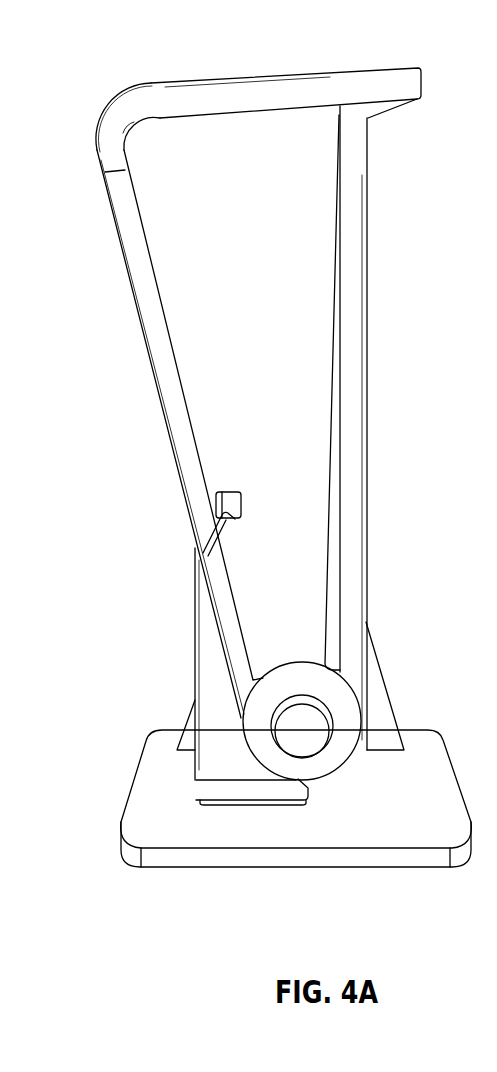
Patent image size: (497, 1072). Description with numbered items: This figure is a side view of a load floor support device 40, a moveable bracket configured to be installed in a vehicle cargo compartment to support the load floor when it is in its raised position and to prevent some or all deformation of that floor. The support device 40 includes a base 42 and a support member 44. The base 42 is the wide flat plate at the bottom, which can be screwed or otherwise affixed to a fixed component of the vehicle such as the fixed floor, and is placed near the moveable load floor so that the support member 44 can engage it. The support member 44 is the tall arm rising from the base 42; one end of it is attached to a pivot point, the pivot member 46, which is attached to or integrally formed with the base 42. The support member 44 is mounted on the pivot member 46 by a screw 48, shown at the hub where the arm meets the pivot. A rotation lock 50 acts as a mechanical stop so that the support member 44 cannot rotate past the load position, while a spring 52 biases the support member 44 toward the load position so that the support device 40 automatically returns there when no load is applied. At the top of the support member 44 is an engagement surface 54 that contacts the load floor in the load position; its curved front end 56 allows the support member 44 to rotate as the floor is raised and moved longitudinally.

The load floor support device 40 is at (129, 39).
The base 42 is at (317, 855).
The support member 44 is at (187, 340).
The pivot member 46 is at (378, 657).
The screw 48 is at (303, 732).
The rotation lock 50 is at (230, 788).
The spring 52 is at (222, 512).
The engagement surface 54 is at (293, 75).
The curved front end 56 is at (117, 127).